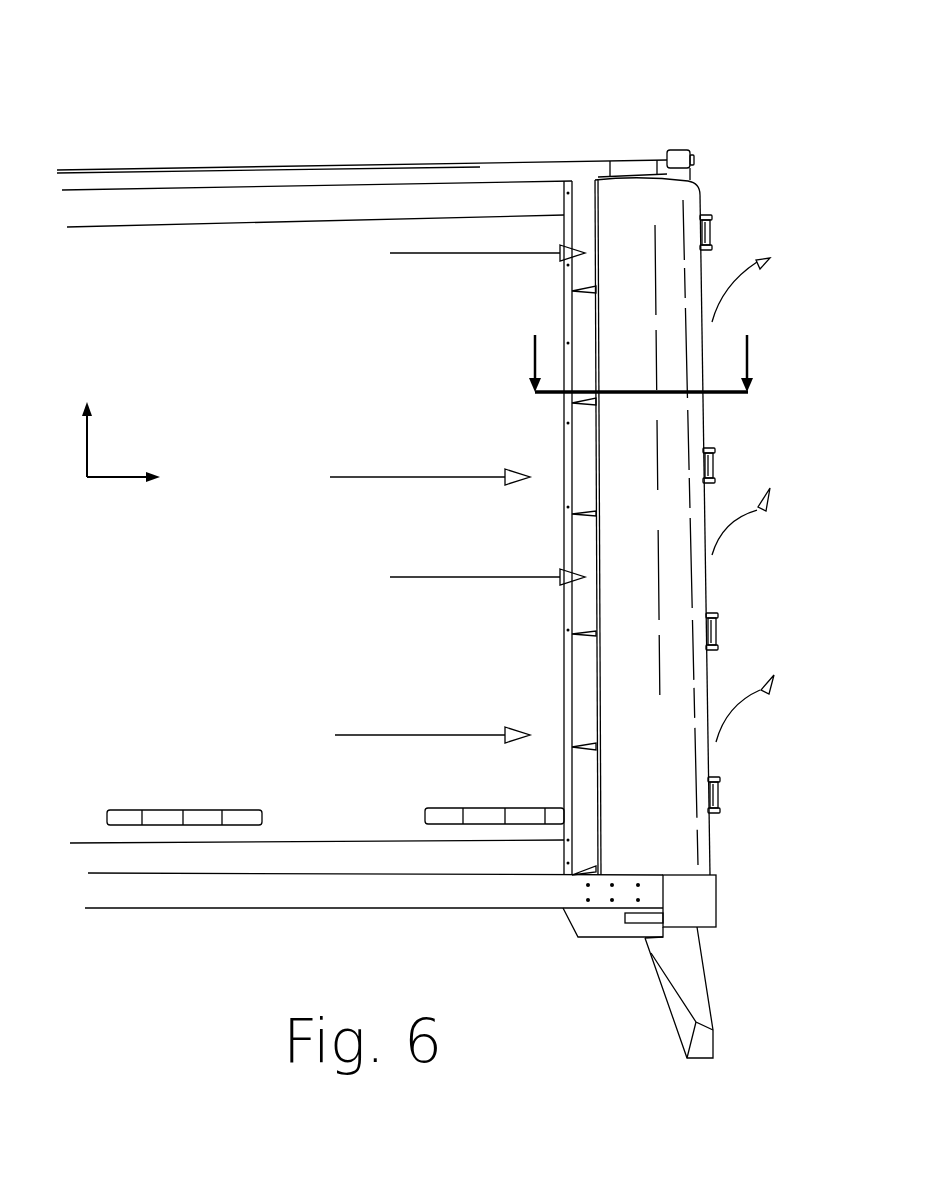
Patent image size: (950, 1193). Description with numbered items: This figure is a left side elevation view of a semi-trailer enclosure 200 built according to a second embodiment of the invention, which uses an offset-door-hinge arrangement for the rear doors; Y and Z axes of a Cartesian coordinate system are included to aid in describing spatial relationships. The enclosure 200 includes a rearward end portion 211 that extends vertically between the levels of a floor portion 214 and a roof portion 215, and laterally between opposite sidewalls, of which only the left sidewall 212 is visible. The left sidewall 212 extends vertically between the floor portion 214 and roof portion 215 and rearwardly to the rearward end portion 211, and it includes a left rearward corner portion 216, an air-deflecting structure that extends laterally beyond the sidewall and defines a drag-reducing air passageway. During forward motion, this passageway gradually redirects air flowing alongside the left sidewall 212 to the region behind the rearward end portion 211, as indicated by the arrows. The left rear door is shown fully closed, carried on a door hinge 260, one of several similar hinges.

The semi-trailer enclosure 200 is at (90, 98).
The roof portion 215 is at (212, 167).
The left sidewall 212 is at (214, 304).
The floor portion 214 is at (212, 893).
The left rearward corner portion 216 is at (628, 857).
The rearward end portion 211 is at (797, 927).
The door hinge 260 is at (724, 460).